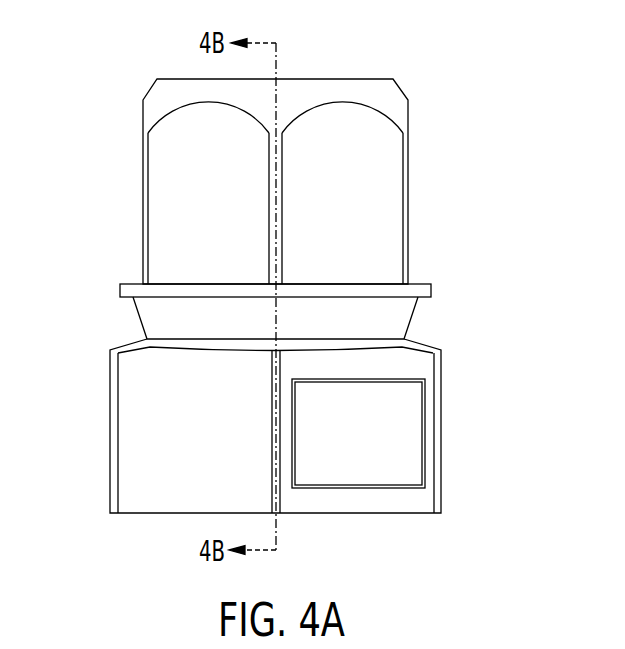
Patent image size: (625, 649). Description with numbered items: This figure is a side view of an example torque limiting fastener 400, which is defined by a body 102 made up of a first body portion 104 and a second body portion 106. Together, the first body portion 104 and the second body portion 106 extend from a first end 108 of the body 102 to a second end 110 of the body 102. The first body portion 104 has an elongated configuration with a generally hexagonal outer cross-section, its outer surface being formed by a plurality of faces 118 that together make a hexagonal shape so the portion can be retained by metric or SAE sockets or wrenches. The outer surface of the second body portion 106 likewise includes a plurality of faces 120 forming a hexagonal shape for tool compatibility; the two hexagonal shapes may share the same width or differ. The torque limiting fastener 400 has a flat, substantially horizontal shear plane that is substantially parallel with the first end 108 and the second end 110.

The torque limiting fastener 400 is at (148, 57).
The first body portion 104 is at (440, 78).
The first end 108 is at (128, 113).
The faces 118 is at (350, 198).
The second body portion 106 is at (100, 350).
The body 102 is at (462, 355).
The faces 120 is at (219, 444).
The second end 110 is at (460, 514).